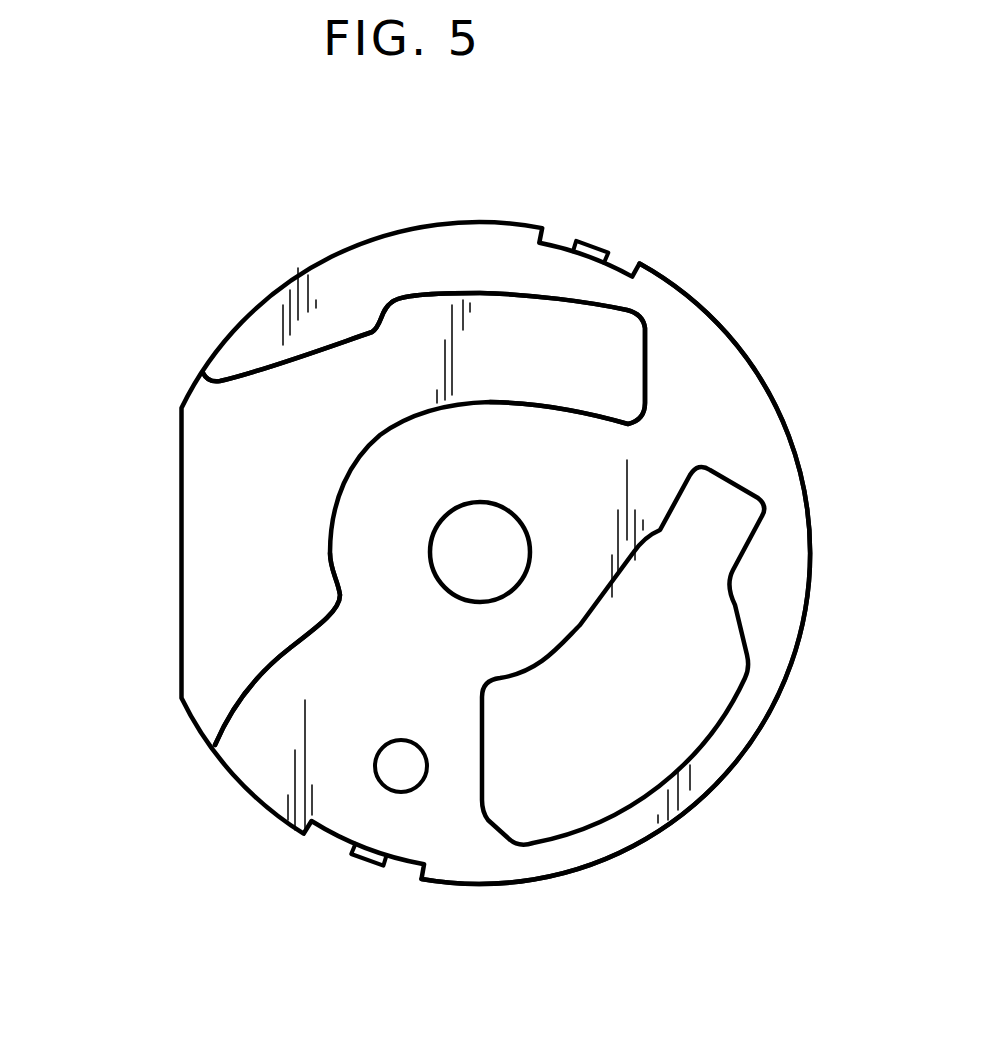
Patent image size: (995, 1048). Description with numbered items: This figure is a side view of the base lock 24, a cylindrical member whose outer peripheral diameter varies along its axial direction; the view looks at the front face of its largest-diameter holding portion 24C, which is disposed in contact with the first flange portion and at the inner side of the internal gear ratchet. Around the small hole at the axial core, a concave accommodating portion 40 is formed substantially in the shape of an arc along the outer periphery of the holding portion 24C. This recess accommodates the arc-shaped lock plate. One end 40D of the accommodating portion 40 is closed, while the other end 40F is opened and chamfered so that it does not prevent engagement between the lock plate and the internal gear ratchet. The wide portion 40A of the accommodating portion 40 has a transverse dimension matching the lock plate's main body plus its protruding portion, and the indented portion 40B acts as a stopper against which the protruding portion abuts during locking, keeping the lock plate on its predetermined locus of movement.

The base lock 24 is at (735, 272).
The holding portion 24C is at (760, 418).
The accommodating portion 40 is at (212, 465).
The wide portion 40A is at (493, 303).
The indented portion 40B is at (395, 298).
The one end of the accommodating portion 40D is at (637, 367).
The other end of the accommodating portion 40F is at (178, 583).